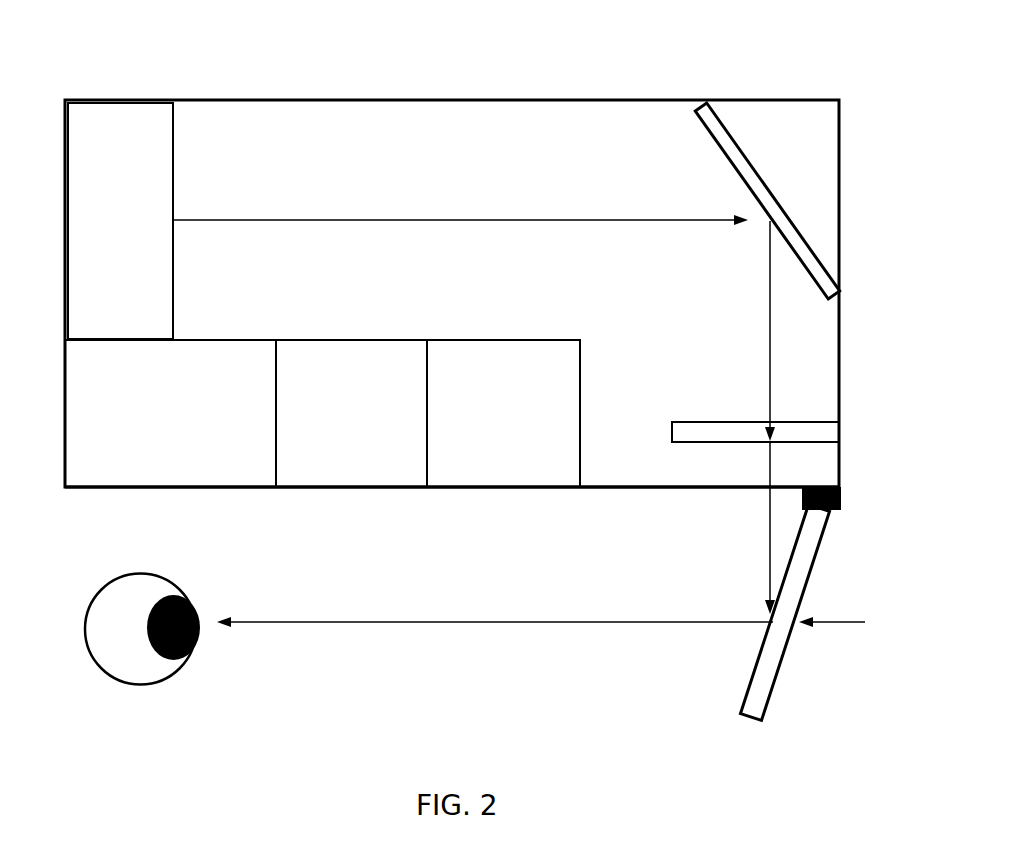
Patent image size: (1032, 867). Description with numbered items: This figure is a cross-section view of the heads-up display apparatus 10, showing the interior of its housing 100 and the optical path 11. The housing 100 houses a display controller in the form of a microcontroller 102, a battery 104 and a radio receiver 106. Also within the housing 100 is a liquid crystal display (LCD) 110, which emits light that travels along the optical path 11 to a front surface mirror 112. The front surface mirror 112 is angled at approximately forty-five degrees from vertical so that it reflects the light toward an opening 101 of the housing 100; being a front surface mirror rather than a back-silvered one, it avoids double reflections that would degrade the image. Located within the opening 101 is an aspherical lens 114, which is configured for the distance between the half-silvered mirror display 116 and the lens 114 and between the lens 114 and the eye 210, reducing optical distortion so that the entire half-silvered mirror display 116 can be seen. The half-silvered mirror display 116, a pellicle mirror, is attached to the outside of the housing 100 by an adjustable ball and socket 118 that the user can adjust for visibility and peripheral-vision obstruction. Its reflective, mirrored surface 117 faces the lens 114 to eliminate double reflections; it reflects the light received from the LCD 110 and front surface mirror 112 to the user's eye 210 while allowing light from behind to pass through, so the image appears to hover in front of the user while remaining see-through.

The heads-up display apparatus 10 is at (134, 71).
The housing 100 is at (450, 100).
The opening 101 is at (630, 498).
The liquid crystal display (LCD) 110 is at (120, 221).
The microcontroller 102 is at (170, 413).
The battery 104 is at (351, 413).
The radio receiver 106 is at (503, 413).
The front surface mirror 112 is at (763, 184).
The aspherical lens 114 is at (799, 433).
The ball and socket 118 is at (825, 485).
The half-silvered mirror display 116 is at (810, 553).
The reflective, mirrored surface 117 is at (741, 672).
The optical path 11 is at (355, 220).
The eye 210 is at (135, 665).